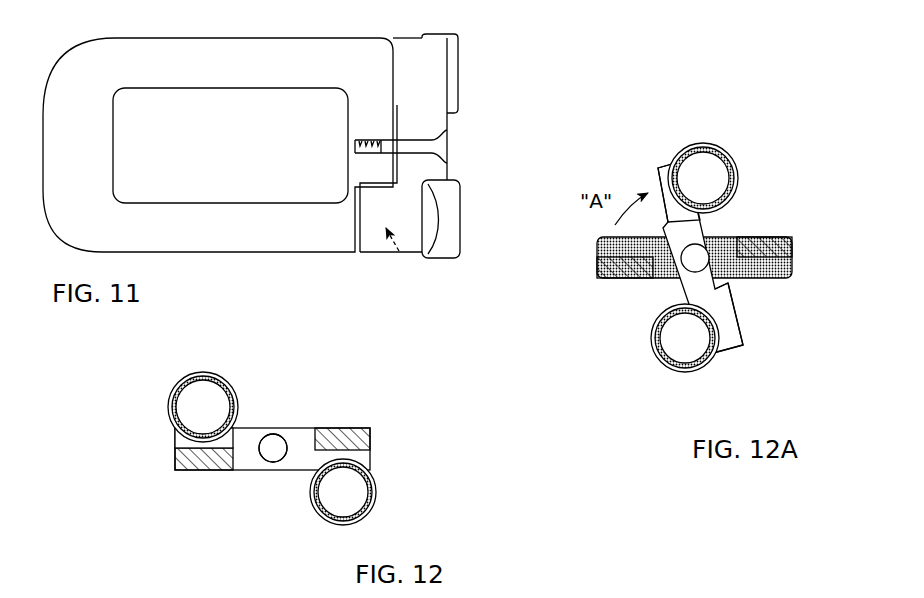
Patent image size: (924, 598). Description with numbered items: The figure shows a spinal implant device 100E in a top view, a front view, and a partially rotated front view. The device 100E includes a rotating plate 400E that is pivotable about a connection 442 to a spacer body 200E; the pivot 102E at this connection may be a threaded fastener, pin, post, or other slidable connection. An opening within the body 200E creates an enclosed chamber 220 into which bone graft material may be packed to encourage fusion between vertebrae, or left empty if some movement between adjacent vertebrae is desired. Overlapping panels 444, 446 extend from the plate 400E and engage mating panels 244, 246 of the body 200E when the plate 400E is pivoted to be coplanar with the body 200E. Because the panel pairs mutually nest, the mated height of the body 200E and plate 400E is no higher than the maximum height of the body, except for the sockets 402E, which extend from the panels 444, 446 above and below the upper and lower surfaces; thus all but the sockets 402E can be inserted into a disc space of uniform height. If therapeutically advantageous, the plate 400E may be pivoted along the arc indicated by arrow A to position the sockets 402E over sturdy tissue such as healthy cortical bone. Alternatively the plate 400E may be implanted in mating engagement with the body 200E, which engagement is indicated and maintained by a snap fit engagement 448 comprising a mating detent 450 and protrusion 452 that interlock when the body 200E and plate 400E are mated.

In FIG. 11, the device 100E is at (414, 406).
In FIG. 11, the pivot 102E is at (366, 163).
In FIG. 12, the pivot 102E is at (256, 438).
In FIG. 11, the body 200E is at (209, 270).
In FIG. 12, the body 200E is at (375, 432).
In FIG. 12A, the body 200E is at (599, 278).
In FIG. 11, the chamber 220 is at (205, 151).
In FIG. 11, the mating panel 244 is at (403, 220).
In FIG. 12, the mating panel 244 is at (183, 471).
In FIG. 11, the mating panel 246 is at (377, 58).
In FIG. 12, the mating panel 246 is at (350, 436).
In FIG. 12, the plate 400E is at (156, 420).
In FIG. 12A, the plate 400E is at (642, 162).
In FIG. 12, the socket 402E is at (383, 497).
In FIG. 12A, the connection 442 is at (699, 238).
In FIG. 12, the overlapping panel 444 is at (176, 440).
In FIG. 12A, the overlapping panel 444 is at (660, 172).
In FIG. 12, the overlapping panel 446 is at (320, 457).
In FIG. 12A, the overlapping panel 446 is at (728, 352).
In FIG. 12A, the snap fit engagement 448 is at (757, 315).
In FIG. 12A, the detent 450 is at (772, 238).
In FIG. 12A, the protrusion 452 is at (724, 292).